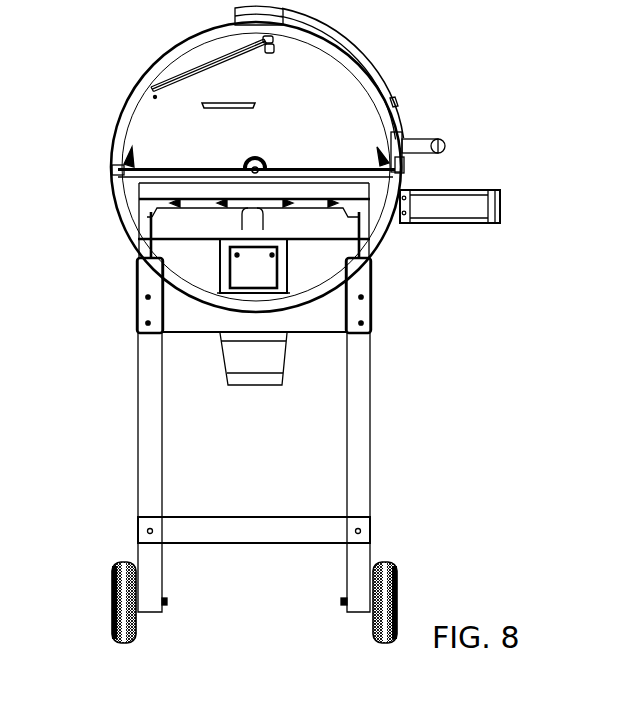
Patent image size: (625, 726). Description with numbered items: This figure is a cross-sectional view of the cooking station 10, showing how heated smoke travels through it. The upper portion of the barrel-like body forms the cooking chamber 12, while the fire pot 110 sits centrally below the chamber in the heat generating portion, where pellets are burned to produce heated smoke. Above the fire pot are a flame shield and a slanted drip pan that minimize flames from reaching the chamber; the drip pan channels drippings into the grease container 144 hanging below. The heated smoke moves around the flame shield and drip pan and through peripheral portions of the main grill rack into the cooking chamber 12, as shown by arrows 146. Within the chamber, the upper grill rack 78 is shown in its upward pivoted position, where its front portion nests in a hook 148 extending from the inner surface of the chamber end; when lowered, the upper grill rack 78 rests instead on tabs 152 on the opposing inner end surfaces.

The cooking station 10 is at (428, 61).
The cooking chamber 12 is at (138, 118).
The upper grill rack 78 is at (214, 63).
The hook 148 is at (272, 54).
The tabs 152 is at (241, 103).
The arrows 146 is at (122, 166).
The fire pot 110 is at (290, 266).
The grease container 144 is at (283, 365).